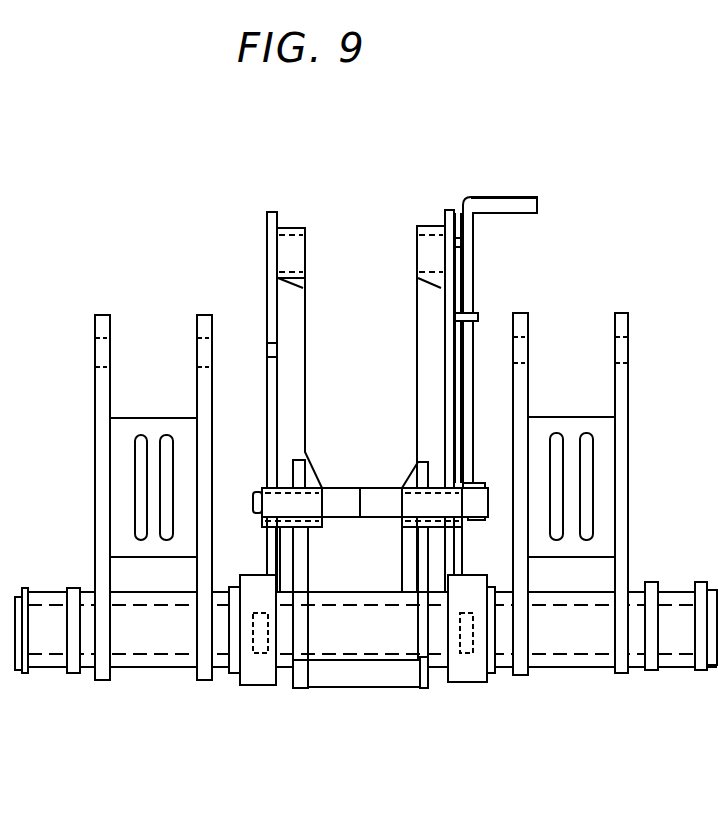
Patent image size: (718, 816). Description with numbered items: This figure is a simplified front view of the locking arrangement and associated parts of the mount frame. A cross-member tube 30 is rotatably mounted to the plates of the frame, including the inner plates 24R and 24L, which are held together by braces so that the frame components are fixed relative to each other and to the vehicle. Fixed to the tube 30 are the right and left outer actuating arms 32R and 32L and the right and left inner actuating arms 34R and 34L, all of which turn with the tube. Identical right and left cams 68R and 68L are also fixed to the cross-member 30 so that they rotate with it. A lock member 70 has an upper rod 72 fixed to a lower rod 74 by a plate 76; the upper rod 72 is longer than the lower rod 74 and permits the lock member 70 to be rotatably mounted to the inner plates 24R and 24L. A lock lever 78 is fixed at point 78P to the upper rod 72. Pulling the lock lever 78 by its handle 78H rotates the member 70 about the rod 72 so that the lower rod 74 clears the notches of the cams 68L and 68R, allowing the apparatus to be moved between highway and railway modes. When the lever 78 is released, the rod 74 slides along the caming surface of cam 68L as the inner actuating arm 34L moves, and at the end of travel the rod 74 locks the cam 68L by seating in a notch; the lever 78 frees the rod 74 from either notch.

The inner plate 24R is at (272, 210).
The inner plate 24L is at (449, 208).
The handle 78H is at (527, 197).
The lock lever 78 is at (516, 333).
The point 78P is at (488, 483).
The lock member 70 is at (347, 488).
The upper rod 72 is at (387, 488).
The plate 76 is at (395, 572).
The outer actuating arm 32R is at (104, 680).
The cross-member tube 30 is at (163, 668).
The inner actuating arm 34R is at (205, 680).
The cam 68R is at (292, 665).
The lower rod 74 is at (365, 675).
The cam 68L is at (433, 677).
The inner actuating arm 34L is at (528, 680).
The outer actuating arm 32L is at (623, 678).